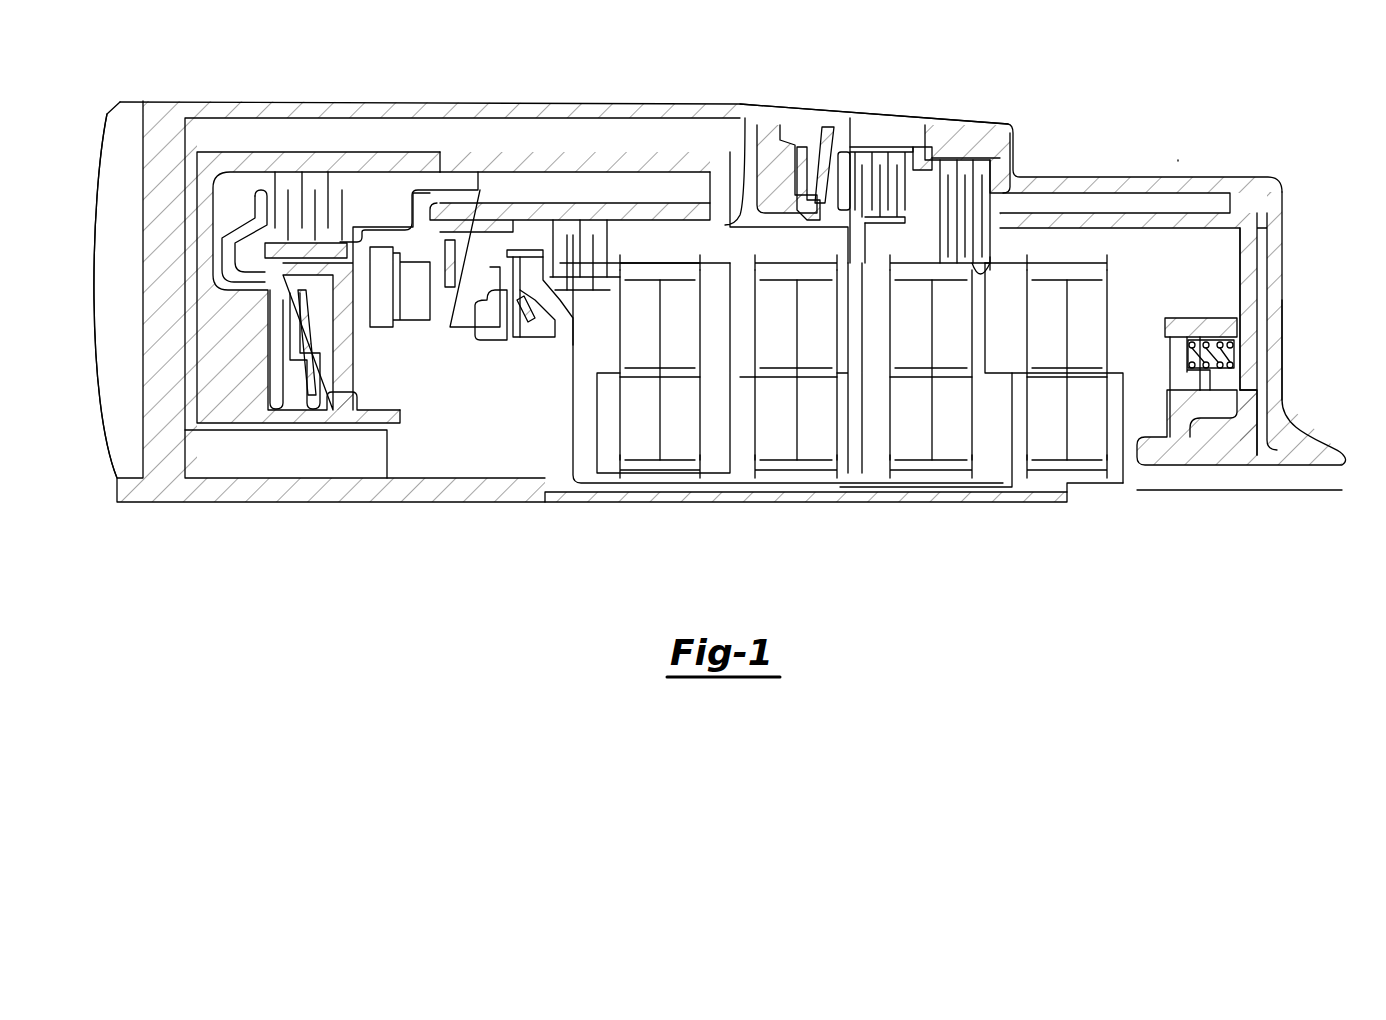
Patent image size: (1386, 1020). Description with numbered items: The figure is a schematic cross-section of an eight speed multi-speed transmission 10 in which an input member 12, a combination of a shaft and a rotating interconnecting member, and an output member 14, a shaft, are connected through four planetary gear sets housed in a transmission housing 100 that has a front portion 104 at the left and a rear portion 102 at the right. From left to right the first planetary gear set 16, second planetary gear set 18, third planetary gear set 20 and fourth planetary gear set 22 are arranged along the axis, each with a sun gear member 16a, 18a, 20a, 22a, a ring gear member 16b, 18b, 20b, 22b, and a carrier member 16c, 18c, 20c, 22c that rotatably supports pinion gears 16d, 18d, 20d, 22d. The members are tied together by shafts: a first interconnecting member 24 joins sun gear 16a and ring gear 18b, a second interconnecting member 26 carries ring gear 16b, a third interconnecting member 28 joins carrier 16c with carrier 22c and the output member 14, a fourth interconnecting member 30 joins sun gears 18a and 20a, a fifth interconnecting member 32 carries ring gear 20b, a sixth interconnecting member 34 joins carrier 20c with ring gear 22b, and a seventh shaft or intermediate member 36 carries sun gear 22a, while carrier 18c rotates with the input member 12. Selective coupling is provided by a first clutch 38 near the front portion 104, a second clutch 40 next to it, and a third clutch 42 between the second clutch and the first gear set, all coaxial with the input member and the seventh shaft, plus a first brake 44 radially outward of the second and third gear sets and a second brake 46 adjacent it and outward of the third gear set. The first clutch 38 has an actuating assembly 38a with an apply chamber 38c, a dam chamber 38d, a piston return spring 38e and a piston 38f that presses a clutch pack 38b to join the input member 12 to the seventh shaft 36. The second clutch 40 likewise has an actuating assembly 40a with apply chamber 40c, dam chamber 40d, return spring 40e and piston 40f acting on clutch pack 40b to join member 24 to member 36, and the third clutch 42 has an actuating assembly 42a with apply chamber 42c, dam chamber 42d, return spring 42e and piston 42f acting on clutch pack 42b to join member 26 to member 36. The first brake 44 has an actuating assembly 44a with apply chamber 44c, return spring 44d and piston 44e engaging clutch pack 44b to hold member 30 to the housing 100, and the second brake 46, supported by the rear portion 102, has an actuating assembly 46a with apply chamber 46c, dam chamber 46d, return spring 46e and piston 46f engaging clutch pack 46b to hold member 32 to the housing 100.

The multi-speed transmission 10 is at (1178, 155).
The input member 12 is at (470, 150).
The output member 14 is at (1262, 492).
The first planetary gear set 16 is at (632, 520).
The sun gear member 16a is at (660, 478).
The ring gear member 16b is at (632, 298).
The carrier member 16c is at (712, 476).
The pinion gears 16d is at (650, 340).
The second planetary gear set 18 is at (786, 520).
The sun gear member 18a is at (808, 478).
The ring gear member 18b is at (772, 265).
The carrier member 18c is at (740, 476).
The pinion gears 18d is at (815, 285).
The third planetary gear set 20 is at (928, 520).
The sun gear member 20a is at (958, 478).
The ring gear member 20b is at (928, 262).
The carrier member 20c is at (880, 476).
The pinion gears 20d is at (940, 285).
The fourth planetary gear set 22 is at (1068, 520).
The sun gear member 22a is at (1093, 478).
The ring gear member 22b is at (1100, 262).
The carrier member 22c is at (1107, 330).
The pinion gears 22d is at (1070, 306).
The first shaft or interconnecting member 24 is at (725, 420).
The second shaft or interconnecting member 26 is at (610, 285).
The third shaft or interconnecting member 28 is at (596, 485).
The fourth shaft or interconnecting member 30 is at (860, 478).
The fifth shaft or interconnecting member 32 is at (1000, 262).
The sixth shaft or interconnecting member 34 is at (984, 377).
The seventh shaft or intermediate member 36 is at (990, 505).
The first clutch 38 is at (350, 200).
The actuating assembly 38a is at (240, 145).
The clutch pack 38b is at (350, 210).
The apply chamber 38c is at (276, 410).
The dam chamber 38d is at (314, 410).
The piston return spring 38e is at (315, 395).
The piston 38f is at (262, 192).
The second clutch 40 is at (660, 170).
The actuating assembly 40a is at (415, 160).
The clutch pack 40b is at (740, 172).
The apply chamber 40c is at (372, 300).
The dam chamber 40d is at (455, 318).
The piston return spring 40e is at (455, 275).
The piston 40f is at (478, 173).
The third clutch 42 is at (580, 200).
The actuating assembly 42a is at (523, 250).
The clutch pack 42b is at (600, 200).
The apply chamber 42c is at (486, 340).
The dam chamber 42d is at (548, 345).
The piston return spring 42e is at (524, 325).
The piston 42f is at (527, 190).
The first brake 44 is at (870, 150).
The actuating assembly 44a is at (845, 85).
The clutch pack 44b is at (920, 135).
The apply chamber 44c is at (786, 140).
The piston return spring 44d is at (845, 125).
The piston 44e is at (810, 150).
The second brake 46 is at (992, 108).
The actuating assembly 46a is at (1290, 243).
The clutch pack 46b is at (1010, 182).
The apply chamber 46c is at (1262, 278).
The dam chamber 46d is at (1190, 380).
The piston return spring 46e is at (1210, 348).
The piston 46f is at (1255, 232).
The transmission housing 100 is at (1008, 124).
The rear portion 102 is at (1285, 372).
The front portion 104 is at (140, 216).